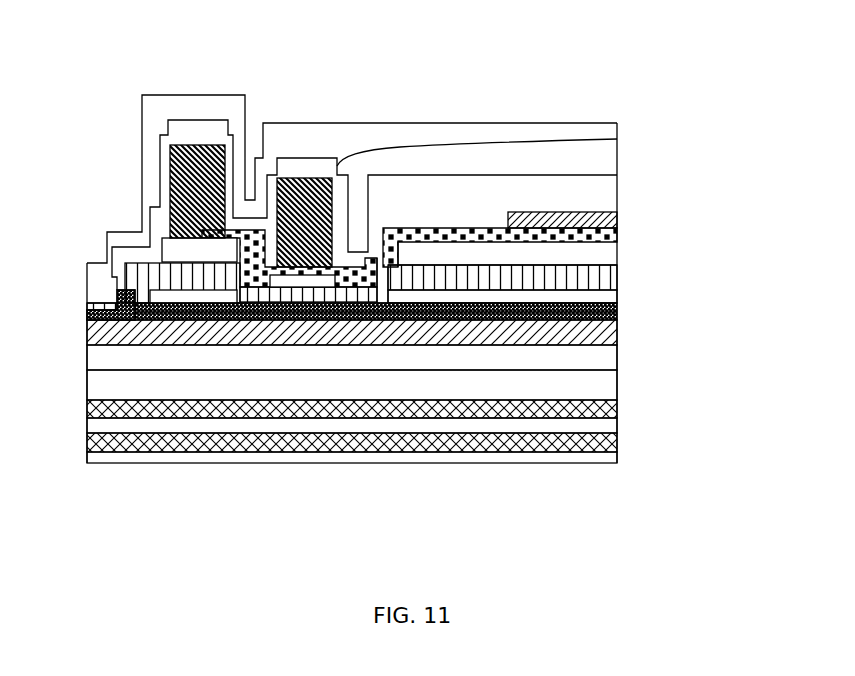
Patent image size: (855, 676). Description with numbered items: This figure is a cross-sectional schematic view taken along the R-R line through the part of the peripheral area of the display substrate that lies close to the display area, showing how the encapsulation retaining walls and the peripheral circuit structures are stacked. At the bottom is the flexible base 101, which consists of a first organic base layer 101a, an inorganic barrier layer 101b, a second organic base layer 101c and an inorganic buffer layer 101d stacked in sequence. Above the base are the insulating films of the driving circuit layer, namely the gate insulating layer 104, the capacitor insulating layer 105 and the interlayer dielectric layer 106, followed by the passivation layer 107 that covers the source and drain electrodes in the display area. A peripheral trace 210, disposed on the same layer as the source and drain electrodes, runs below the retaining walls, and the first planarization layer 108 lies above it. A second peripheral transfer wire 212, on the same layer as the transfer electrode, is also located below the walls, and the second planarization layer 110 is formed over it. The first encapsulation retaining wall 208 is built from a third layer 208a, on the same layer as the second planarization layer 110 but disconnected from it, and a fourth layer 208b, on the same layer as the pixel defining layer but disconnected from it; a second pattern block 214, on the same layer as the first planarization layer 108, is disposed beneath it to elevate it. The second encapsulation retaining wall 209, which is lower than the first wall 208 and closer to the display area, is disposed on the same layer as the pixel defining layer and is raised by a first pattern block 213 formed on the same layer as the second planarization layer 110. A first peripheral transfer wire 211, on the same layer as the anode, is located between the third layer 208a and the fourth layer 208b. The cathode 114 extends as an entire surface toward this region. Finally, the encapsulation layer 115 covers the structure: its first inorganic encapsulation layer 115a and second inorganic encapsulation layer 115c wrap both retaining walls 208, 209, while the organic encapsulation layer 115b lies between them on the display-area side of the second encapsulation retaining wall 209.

The flexible base 101 is at (438, 437).
The first organic base layer 101a is at (620, 460).
The inorganic barrier layer 101b is at (620, 442).
The second organic base layer 101c is at (620, 427).
The inorganic buffer layer 101d is at (620, 407).
The gate insulating layer 104 is at (620, 387).
The capacitor insulating layer 105 is at (620, 358).
The interlayer dielectric layer 106 is at (620, 333).
The passivation layer 107 is at (87, 315).
The first planarization layer 108 is at (620, 293).
The second planarization layer 110 is at (620, 253).
The cathode 114 is at (620, 214).
The encapsulation layer 115 is at (441, 192).
The first inorganic encapsulation layer 115a is at (620, 188).
The organic encapsulation layer 115b is at (620, 150).
The second inorganic encapsulation layer 115c is at (620, 122).
The first encapsulation retaining wall 208 is at (152, 139).
The third layer 208a is at (178, 253).
The fourth layer 208b is at (195, 143).
The second encapsulation retaining wall 209 is at (303, 178).
The peripheral trace 210 is at (620, 311).
The first peripheral transfer wire 211 is at (620, 233).
The second peripheral transfer wire 212 is at (620, 273).
The first pattern block 213 is at (307, 285).
The second pattern block 214 is at (193, 293).